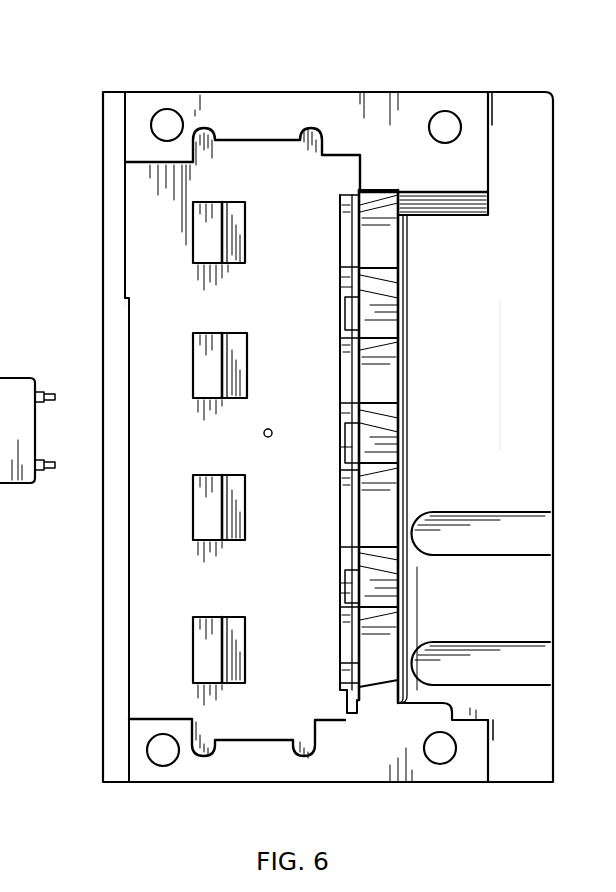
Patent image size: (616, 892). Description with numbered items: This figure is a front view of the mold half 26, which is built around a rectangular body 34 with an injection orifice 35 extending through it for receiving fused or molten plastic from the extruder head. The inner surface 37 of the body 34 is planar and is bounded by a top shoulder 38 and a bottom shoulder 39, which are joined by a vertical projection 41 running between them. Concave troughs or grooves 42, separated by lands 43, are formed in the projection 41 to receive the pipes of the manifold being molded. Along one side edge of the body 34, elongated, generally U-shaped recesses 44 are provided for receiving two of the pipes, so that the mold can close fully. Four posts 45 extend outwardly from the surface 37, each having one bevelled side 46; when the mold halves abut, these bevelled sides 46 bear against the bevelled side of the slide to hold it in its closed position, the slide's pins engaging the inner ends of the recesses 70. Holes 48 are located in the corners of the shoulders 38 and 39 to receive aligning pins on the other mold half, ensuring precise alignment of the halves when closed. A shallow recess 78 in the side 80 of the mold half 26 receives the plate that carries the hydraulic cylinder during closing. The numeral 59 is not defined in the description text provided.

The mold half 26 is at (262, 92).
The rectangular body 34 is at (515, 405).
The injection orifice 35 is at (268, 440).
The inner surface 37 is at (290, 586).
The top shoulder 38 is at (348, 92).
The bottom shoulder 39 is at (234, 768).
The vertical projection 41 is at (402, 352).
The concave troughs or grooves 42 is at (390, 238).
The lands 43 is at (386, 310).
The U-shaped recesses 44 is at (515, 555).
The posts 45 is at (200, 335).
The bevelled side 46 is at (240, 333).
The holes 48 is at (177, 113).
The contact tab 59 is at (340, 240).
The recesses 70 is at (345, 312).
The shallow recess 78 is at (126, 545).
The side 80 is at (122, 680).